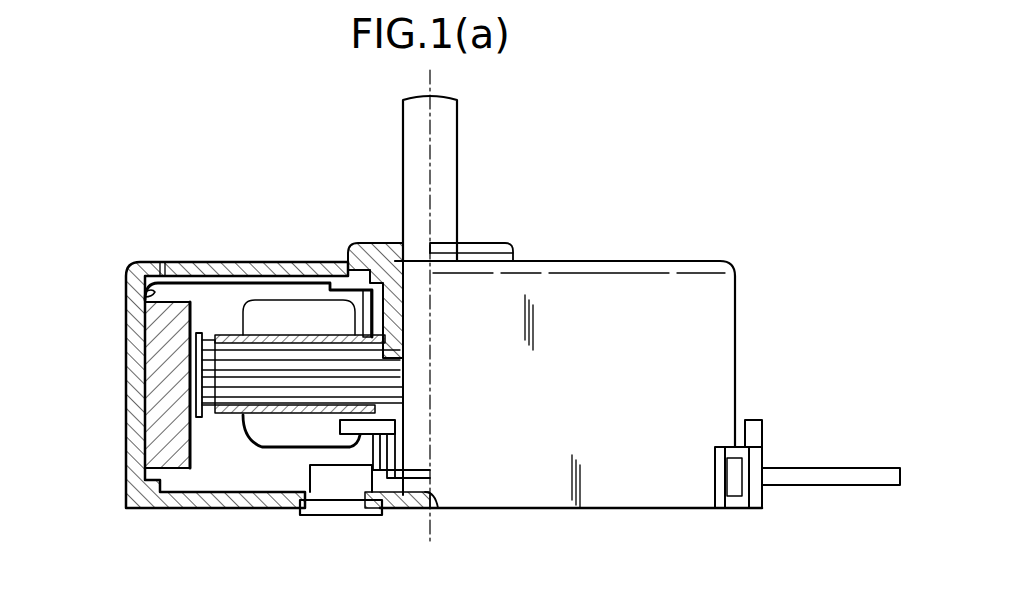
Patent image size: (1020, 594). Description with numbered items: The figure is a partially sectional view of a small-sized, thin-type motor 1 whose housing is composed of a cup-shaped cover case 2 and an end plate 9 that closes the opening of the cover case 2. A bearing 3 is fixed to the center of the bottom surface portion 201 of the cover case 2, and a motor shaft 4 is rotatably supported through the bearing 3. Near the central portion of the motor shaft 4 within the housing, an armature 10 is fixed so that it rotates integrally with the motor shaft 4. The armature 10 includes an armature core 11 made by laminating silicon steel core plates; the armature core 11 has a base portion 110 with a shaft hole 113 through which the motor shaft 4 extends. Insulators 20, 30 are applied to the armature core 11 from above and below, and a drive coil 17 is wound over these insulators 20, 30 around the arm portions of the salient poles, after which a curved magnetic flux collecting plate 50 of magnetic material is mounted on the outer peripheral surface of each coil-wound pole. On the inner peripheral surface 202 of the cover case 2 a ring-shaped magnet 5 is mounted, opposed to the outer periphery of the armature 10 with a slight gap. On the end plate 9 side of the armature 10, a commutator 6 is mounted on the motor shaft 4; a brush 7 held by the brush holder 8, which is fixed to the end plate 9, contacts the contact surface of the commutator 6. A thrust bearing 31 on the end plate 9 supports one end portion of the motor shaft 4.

The motor 1 is at (647, 158).
The cover case 2 is at (133, 262).
The bearing 3 is at (376, 246).
The motor shaft 4 is at (459, 150).
The magnet 5 is at (158, 428).
The commutator 6 is at (400, 422).
The brush 7 is at (395, 508).
The brush holder 8 is at (346, 502).
The end plate 9 is at (268, 410).
The armature 10 is at (264, 382).
The armature core 11 is at (212, 388).
The drive coil 17 is at (250, 440).
The insulator 20 is at (332, 300).
The insulator 30 is at (292, 417).
The thrust bearing 31 is at (430, 490).
The magnetic flux collecting plate 50 is at (198, 362).
The base portion 110 is at (378, 400).
The shaft hole 113 is at (395, 388).
The bottom surface portion 201 is at (173, 262).
The inner peripheral surface 202 is at (146, 292).